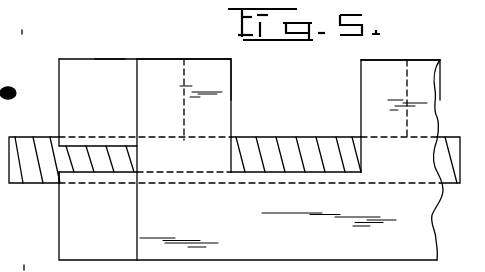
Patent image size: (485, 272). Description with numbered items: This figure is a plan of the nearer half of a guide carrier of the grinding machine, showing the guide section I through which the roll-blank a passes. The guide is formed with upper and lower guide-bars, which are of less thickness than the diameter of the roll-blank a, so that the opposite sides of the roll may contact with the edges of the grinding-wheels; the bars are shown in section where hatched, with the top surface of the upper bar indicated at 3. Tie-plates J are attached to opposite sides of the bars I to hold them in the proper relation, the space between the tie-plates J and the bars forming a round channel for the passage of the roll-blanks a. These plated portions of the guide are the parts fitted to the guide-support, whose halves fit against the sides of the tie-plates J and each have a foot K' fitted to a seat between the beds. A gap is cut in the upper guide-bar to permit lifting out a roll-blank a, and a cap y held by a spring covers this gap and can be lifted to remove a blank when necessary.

The guide section I is at (251, 148).
The roll-blank a is at (36, 137).
The top surface 3 is at (100, 63).
The tie-plate J is at (138, 75).
The cap y is at (12, 90).
The foot K' is at (20, 150).